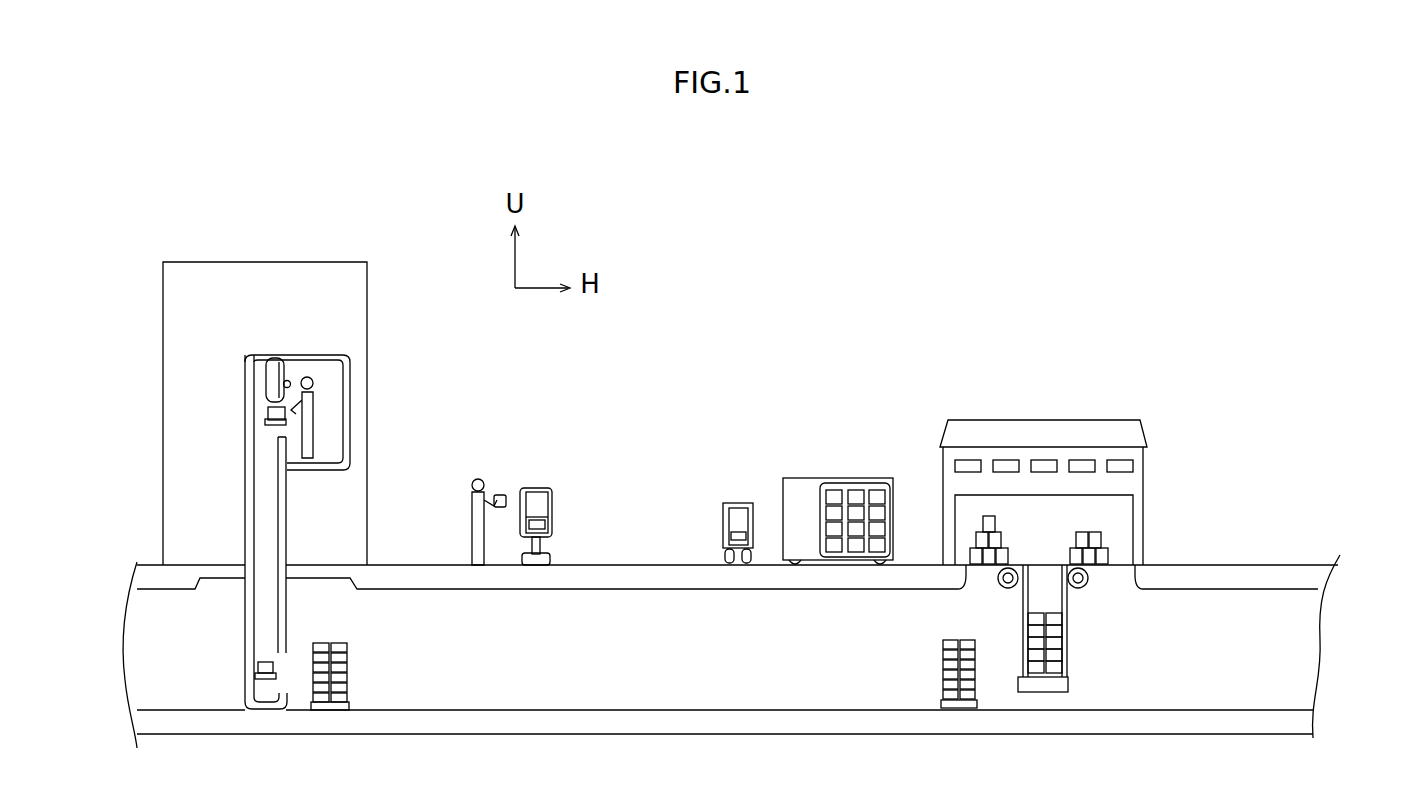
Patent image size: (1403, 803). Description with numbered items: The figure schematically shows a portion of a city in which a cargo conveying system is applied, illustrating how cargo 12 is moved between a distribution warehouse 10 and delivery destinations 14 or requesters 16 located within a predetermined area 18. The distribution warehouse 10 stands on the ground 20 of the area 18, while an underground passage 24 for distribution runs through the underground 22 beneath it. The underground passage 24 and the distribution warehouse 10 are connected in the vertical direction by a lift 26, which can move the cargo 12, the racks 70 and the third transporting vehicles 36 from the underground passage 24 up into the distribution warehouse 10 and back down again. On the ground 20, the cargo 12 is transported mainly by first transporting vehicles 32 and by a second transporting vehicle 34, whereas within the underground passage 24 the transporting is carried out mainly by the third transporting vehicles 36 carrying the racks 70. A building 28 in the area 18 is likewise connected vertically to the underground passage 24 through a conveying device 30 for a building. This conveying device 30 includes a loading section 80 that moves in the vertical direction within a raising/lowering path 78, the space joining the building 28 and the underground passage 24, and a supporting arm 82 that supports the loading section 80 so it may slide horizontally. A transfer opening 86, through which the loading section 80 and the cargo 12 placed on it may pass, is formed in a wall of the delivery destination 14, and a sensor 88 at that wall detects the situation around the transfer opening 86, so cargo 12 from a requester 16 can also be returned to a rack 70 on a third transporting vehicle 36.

The distribution warehouse 10 is at (1100, 420).
The cargo 12 is at (734, 521).
The delivery destination 14 is at (274, 495).
The requester 16 is at (274, 495).
The predetermined area 18 is at (820, 245).
The ground 20 is at (1272, 563).
The underground 22 is at (1292, 633).
The underground passage 24 is at (1252, 700).
The lift 26 is at (1069, 689).
The building 28 is at (193, 262).
The conveying device for a building 30 is at (265, 702).
The first transporting vehicle 32 is at (552, 490).
The second transporting vehicle 34 is at (806, 478).
The third transporting vehicle 36 is at (350, 706).
The rack 70 is at (348, 645).
The raising/lowering path 78 is at (260, 513).
The loading section 80 is at (266, 425).
The supporting arm 82 is at (262, 410).
The transfer opening 86 is at (270, 398).
The sensor 88 is at (288, 380).